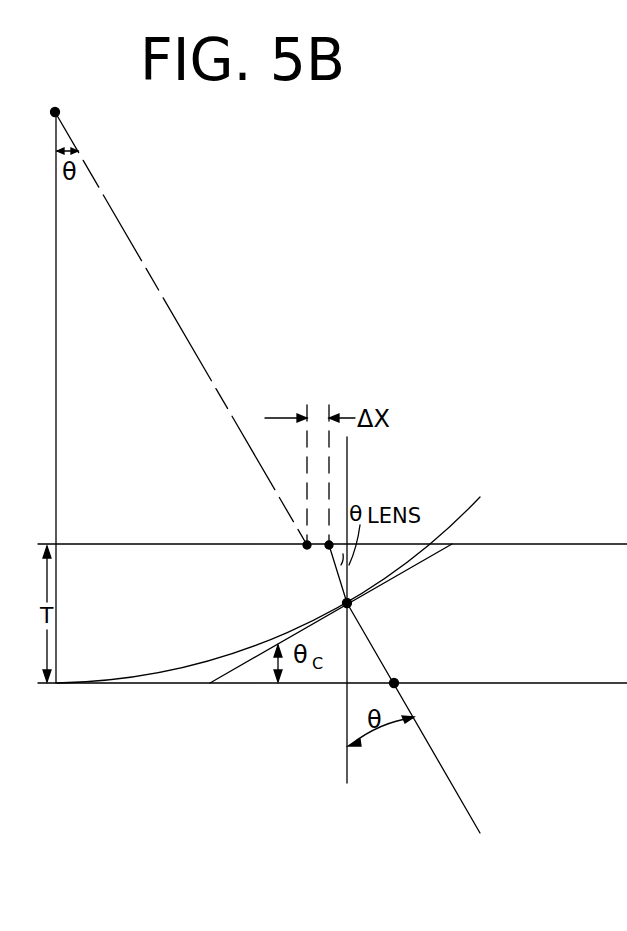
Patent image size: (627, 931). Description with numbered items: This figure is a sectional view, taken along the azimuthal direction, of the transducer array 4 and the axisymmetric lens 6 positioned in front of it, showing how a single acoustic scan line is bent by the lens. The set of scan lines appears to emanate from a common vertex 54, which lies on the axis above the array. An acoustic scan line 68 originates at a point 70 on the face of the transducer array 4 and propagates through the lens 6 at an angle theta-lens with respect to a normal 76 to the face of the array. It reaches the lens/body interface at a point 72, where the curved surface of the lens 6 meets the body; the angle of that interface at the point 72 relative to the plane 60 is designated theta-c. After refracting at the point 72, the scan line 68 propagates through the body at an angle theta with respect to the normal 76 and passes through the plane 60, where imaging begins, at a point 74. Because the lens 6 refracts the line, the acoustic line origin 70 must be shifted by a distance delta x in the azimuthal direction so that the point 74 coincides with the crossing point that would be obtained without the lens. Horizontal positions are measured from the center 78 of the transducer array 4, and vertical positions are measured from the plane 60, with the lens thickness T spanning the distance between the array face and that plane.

The common vertex 54 is at (53, 95).
The lens 6 is at (92, 613).
The plane 60 is at (315, 685).
The point on the face of the transducer array 70 is at (324, 477).
The normal 76 is at (343, 627).
The transducer array 4 is at (430, 545).
The acoustic scan line 68 is at (334, 563).
The point at the lens/body interface 72 is at (352, 604).
The point where the scan line crosses the imaging plane 74 is at (395, 679).
The center of the transducer array 78 is at (59, 684).